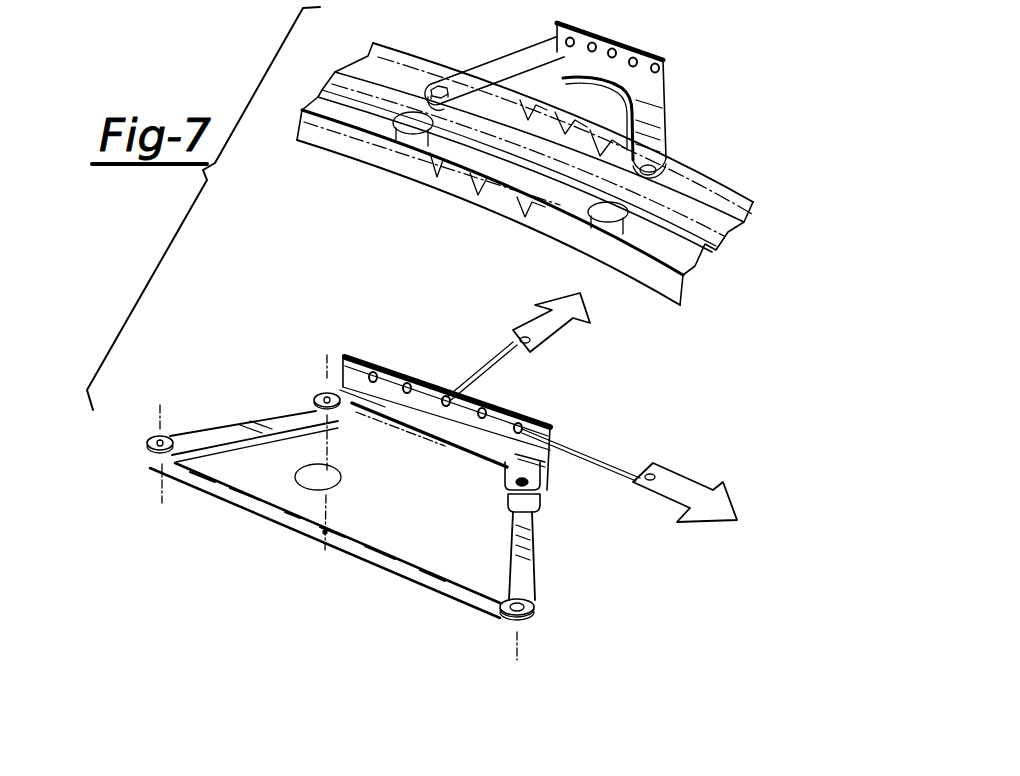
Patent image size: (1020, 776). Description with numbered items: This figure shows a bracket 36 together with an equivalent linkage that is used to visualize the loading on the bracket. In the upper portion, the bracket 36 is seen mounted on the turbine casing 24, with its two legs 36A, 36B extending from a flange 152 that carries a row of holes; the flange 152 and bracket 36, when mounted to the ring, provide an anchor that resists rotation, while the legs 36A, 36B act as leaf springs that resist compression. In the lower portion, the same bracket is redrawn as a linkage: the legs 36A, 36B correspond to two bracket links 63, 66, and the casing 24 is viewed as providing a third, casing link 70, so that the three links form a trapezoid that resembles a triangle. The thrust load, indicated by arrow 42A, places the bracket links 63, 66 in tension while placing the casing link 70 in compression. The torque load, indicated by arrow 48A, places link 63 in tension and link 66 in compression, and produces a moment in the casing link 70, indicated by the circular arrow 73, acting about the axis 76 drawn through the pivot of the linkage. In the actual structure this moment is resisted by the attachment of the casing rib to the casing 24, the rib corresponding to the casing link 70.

The turbine casing 24 is at (686, 231).
The bracket 36 is at (657, 97).
The leg 36A is at (485, 73).
The leg 36B is at (657, 110).
The flange 152 is at (597, 42).
The arrow indicating thrust load 42A is at (583, 308).
The arrow indicating torque load 48A is at (680, 480).
The bracket link 63 is at (238, 425).
The bracket link 66 is at (568, 530).
The casing link 70 is at (415, 583).
The circular arrow indicating moment 73 is at (367, 447).
The axis 76 is at (324, 548).